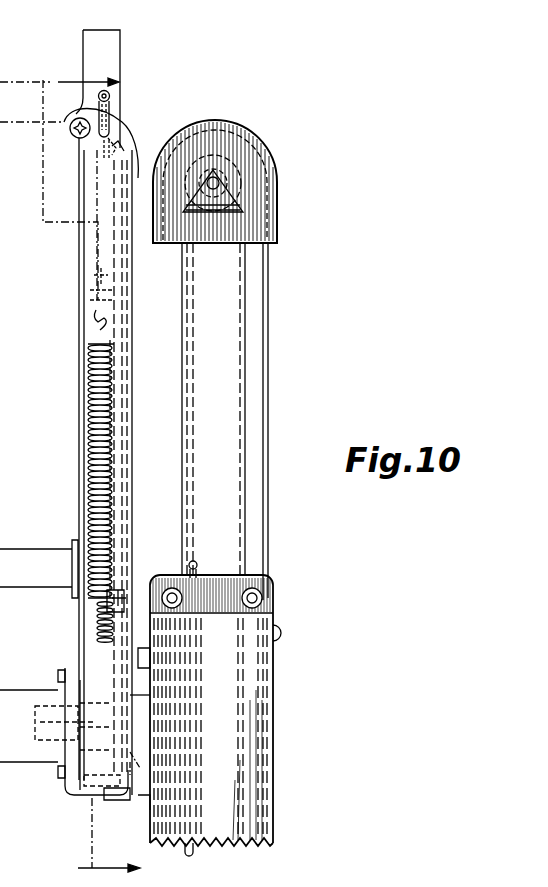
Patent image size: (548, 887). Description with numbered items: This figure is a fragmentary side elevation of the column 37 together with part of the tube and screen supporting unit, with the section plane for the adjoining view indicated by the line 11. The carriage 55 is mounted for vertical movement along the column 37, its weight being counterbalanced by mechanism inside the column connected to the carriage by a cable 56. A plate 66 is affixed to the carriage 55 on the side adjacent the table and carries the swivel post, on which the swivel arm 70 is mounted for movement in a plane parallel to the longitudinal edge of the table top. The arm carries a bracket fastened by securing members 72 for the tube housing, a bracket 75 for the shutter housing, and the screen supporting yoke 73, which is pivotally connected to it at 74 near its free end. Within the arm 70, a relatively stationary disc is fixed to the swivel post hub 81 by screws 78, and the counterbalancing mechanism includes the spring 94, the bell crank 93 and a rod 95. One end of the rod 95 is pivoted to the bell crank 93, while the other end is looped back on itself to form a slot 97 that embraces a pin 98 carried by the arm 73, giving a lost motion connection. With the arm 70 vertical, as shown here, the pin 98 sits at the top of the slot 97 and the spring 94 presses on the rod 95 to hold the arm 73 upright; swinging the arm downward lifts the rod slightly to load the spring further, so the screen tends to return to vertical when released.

The section line 11— 11 is at (70, 475).
The screen supporting yoke 73 is at (121, 48).
The pin 98 is at (128, 121).
The slot 97 is at (122, 141).
The pivotal connection 74 is at (72, 131).
The swivel arm 70 is at (80, 270).
The counterbalancing spring 94 is at (84, 369).
The rod 95 is at (126, 392).
The cable 56 is at (270, 363).
The column 37 is at (245, 420).
The plate 66 is at (140, 648).
The carriage 55 is at (274, 694).
The bracket 75 is at (27, 548).
The securing members 72 is at (61, 672).
The bell crank 93 is at (75, 795).
The screws 78 is at (92, 797).
The swivel post hub 81 is at (130, 797).